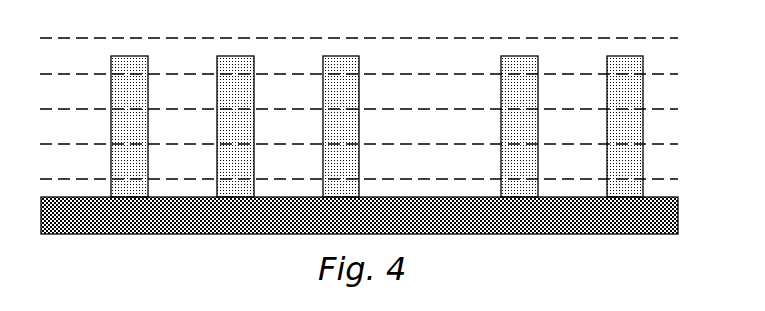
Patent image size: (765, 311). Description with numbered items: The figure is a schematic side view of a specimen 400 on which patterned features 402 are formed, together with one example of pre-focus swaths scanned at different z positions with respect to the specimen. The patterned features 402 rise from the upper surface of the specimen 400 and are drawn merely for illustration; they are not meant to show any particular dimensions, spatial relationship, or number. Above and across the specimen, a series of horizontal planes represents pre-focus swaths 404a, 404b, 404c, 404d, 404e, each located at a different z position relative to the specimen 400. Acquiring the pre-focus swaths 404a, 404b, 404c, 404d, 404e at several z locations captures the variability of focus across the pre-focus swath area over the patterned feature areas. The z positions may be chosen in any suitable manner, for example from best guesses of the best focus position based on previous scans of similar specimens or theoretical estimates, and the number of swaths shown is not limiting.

The specimen 400 is at (678, 213).
The patterned features 402 is at (125, 187).
The pre-focus swath 404a is at (655, 38).
The pre-focus swath 404b is at (655, 74).
The pre-focus swath 404c is at (655, 109).
The pre-focus swath 404d is at (655, 144).
The pre-focus swath 404e is at (668, 180).